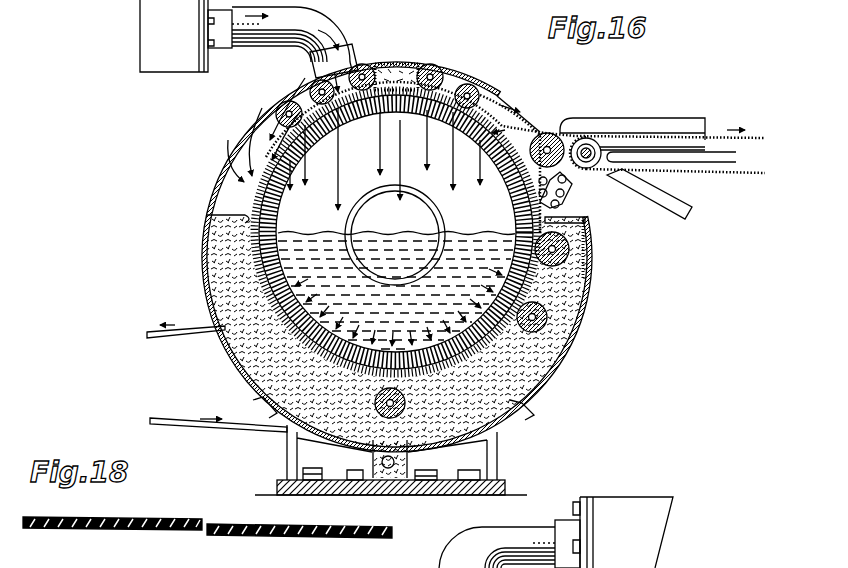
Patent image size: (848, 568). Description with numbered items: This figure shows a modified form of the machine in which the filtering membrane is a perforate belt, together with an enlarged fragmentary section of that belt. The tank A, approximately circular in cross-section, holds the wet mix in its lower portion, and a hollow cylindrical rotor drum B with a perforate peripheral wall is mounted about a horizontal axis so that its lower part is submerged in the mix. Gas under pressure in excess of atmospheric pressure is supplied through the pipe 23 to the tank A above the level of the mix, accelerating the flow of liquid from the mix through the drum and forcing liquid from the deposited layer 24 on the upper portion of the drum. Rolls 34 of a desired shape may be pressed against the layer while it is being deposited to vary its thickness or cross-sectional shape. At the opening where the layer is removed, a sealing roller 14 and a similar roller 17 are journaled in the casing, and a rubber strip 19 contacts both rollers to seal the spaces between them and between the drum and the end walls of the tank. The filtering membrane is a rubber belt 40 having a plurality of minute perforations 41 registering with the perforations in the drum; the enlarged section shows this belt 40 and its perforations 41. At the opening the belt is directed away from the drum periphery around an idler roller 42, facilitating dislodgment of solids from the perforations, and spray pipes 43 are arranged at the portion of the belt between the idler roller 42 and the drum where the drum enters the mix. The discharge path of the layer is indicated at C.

In FIG. 16, the sealing roller 14 is at (582, 274).
In FIG. 16, the roller 17 is at (482, 98).
In FIG. 16, the rubber strip 19 is at (510, 68).
In FIG. 16, the pipe 23 is at (265, 37).
In FIG. 16, the deposited layer 24 is at (547, 375).
In FIG. 16, the rolls 34 is at (549, 327).
In FIG. 16, the rubber belt 40 is at (560, 213).
In FIG. 18, the rubber belt 40 is at (240, 532).
In FIG. 18, the perforations 41 is at (192, 519).
In FIG. 16, the idler roller 42 is at (546, 133).
In FIG. 16, the spray pipes 43 is at (539, 181).
In FIG. 16, the tank A is at (205, 213).
In FIG. 16, the rotor drum B is at (245, 178).
In FIG. 16, the discharge conveyor C is at (683, 143).